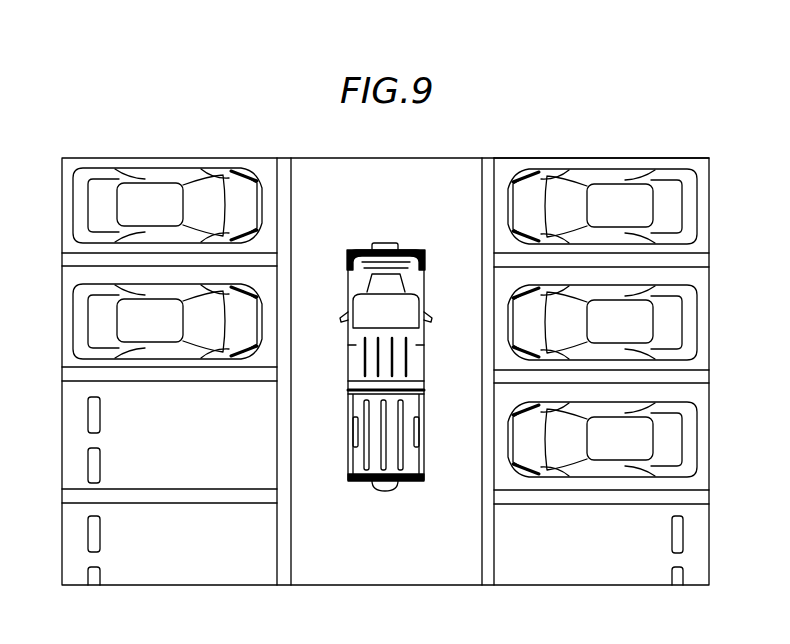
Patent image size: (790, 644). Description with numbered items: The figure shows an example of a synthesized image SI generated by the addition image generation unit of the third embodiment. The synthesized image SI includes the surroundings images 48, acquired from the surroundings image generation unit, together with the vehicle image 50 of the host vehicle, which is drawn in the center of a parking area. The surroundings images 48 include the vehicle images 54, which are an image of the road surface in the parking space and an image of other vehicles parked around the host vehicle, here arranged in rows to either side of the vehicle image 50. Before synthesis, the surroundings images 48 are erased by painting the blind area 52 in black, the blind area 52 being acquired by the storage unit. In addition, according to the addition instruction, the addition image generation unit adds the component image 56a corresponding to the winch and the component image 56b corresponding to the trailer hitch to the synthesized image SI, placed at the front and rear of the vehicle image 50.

The surroundings images 48 is at (237, 575).
The vehicle image 50 is at (391, 378).
The blind area 52 is at (418, 250).
The vehicle images 54 is at (73, 203).
The component image 56a is at (385, 243).
The component image 56b is at (383, 481).
The synthesized image SI is at (612, 158).